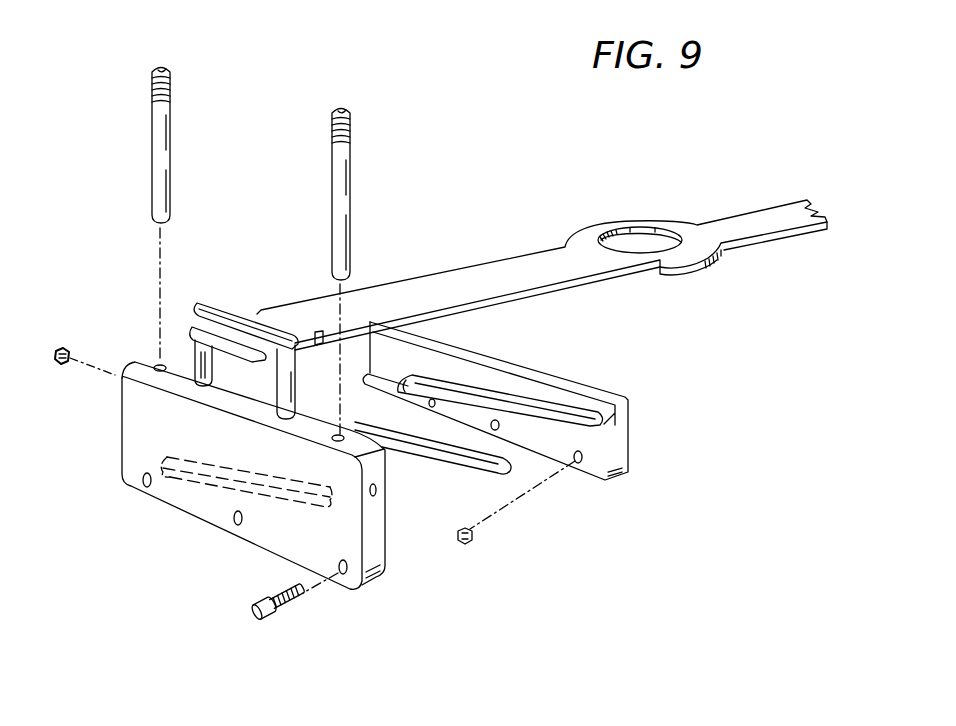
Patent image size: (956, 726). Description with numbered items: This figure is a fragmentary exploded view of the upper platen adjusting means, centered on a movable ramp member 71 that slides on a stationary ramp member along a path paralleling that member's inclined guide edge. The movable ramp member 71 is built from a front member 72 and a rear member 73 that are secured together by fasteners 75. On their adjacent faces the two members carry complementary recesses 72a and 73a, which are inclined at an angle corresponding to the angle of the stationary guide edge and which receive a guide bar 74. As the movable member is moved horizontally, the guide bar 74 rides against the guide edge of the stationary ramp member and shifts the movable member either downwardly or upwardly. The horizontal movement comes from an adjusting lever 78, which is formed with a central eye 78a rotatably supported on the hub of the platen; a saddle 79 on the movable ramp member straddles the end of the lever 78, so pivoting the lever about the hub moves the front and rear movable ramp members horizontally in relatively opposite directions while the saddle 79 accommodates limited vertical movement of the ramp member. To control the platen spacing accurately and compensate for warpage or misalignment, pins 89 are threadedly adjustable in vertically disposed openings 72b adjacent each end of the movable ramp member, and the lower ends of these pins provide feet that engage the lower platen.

The movable ramp member 71 is at (214, 527).
The front member 72 is at (273, 531).
The recess 72a is at (203, 483).
The vertically disposed openings 72b is at (165, 368).
The rear member 73 is at (621, 450).
The recess 73a is at (557, 408).
The guide bar 74 is at (491, 472).
The fasteners 75 is at (280, 607).
The adjusting lever 78 is at (470, 283).
The central eye 78a is at (617, 237).
The saddle 79 is at (289, 398).
The pins 89 is at (172, 148).